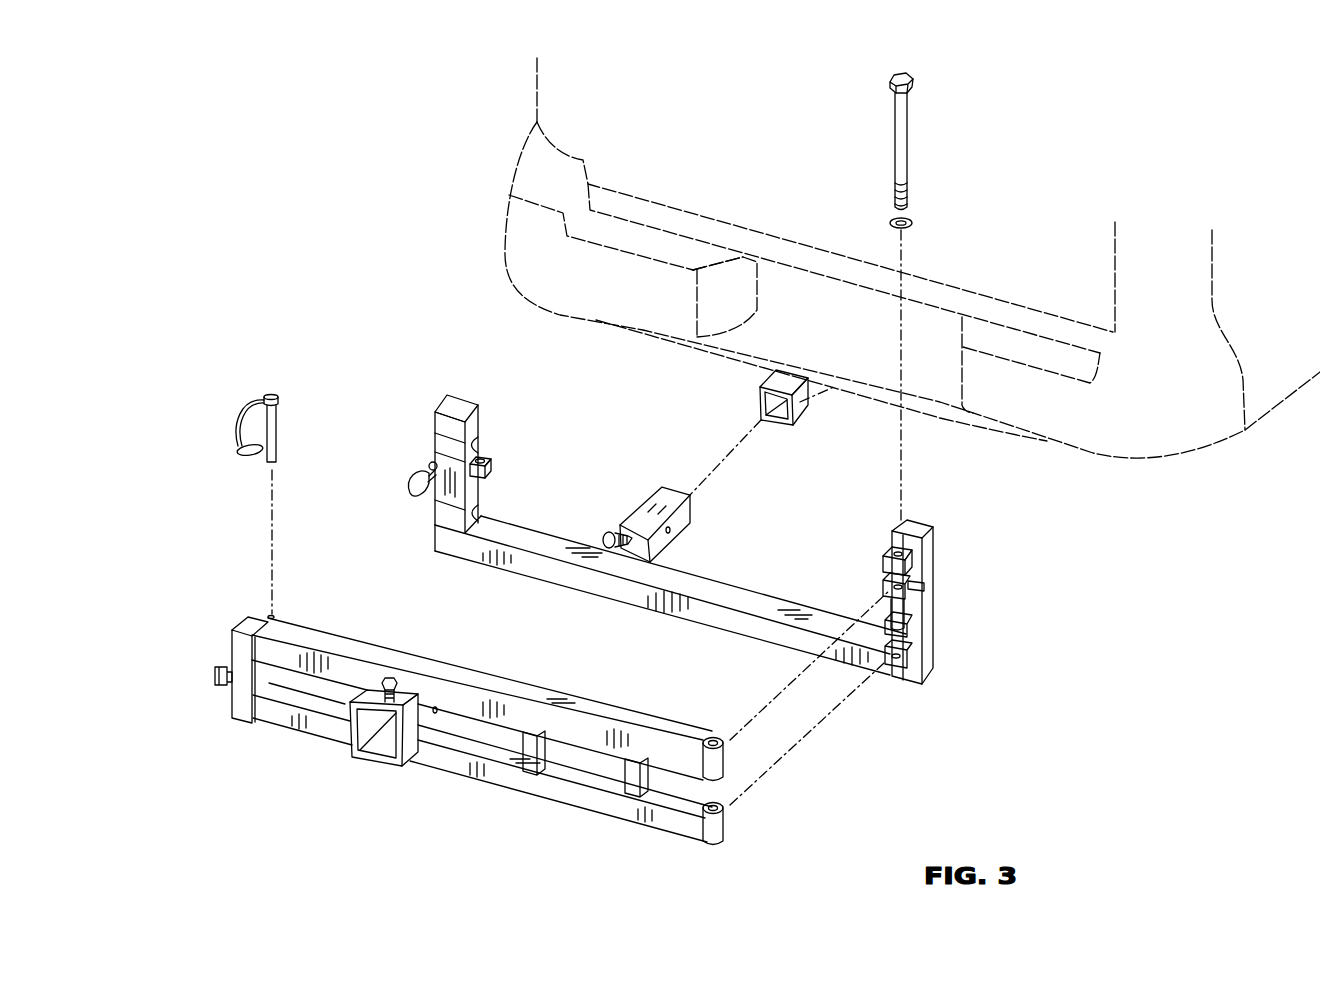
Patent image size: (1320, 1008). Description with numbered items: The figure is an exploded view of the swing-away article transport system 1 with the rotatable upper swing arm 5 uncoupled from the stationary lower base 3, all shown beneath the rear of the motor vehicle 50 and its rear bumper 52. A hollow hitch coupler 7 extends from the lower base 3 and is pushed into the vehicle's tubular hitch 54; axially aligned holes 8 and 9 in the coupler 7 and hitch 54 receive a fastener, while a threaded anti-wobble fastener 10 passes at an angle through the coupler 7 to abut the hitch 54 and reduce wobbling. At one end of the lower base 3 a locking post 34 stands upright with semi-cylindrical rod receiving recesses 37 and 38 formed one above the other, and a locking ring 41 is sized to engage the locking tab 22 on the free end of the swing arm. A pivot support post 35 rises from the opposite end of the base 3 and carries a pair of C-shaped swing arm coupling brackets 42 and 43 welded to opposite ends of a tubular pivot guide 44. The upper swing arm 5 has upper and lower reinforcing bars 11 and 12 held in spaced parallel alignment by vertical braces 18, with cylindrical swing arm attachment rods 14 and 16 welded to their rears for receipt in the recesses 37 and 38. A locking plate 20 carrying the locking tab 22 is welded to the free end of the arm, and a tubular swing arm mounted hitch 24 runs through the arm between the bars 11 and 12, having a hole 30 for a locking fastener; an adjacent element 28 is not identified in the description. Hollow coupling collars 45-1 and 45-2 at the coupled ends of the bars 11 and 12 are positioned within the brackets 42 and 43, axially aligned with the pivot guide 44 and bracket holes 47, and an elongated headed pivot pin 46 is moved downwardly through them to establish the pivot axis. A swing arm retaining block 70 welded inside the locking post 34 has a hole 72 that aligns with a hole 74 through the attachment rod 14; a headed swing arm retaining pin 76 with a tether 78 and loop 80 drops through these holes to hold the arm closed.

The swing-away article transport system 1 is at (577, 629).
The stationary lower base 3 is at (743, 598).
The rotatable upper swing arm 5 is at (527, 726).
The hitch coupler 7 is at (660, 497).
The hole 8 is at (671, 533).
The hole 9 is at (803, 402).
The anti-wobble fastener 10 is at (604, 535).
The upper swing arm reinforcing bar 11 is at (583, 730).
The lower swing arm reinforcing bar 12 is at (584, 800).
The swing arm attachment rod 14 is at (500, 683).
The swing arm attachment rod 16 is at (290, 700).
The braces 18 is at (530, 765).
The locking plate 20 is at (236, 706).
The locking tab 22 is at (213, 678).
The tubular swing arm mounted hitch 24 is at (382, 748).
The bolt 28 is at (388, 678).
The hole 30 is at (437, 714).
The locking post 34 is at (449, 464).
The pivot support post 35 is at (930, 634).
The semi-cylindrical rod receiving recess 37 is at (440, 442).
The semi-cylindrical rod receiving recess 38 is at (437, 512).
The locking ring 41 is at (406, 487).
The swing arm coupling bracket 42 is at (913, 572).
The swing arm coupling bracket 43 is at (912, 653).
The tubular pivot guide 44 is at (907, 612).
The coupling collar 45-1 is at (725, 757).
The coupling collar 45-2 is at (725, 826).
The pivot pin 46 is at (905, 151).
The bracket holes 47 is at (896, 553).
The motor vehicle 50 is at (826, 236).
The rear bumper 52 is at (517, 250).
The tubular hitch 54 is at (760, 400).
The swing arm retaining block 70 is at (487, 472).
The hole 72 is at (482, 459).
The hole 74 is at (268, 615).
The headed swing arm retaining pin 76 is at (277, 425).
The tether 78 is at (236, 425).
The loop 80 is at (252, 456).